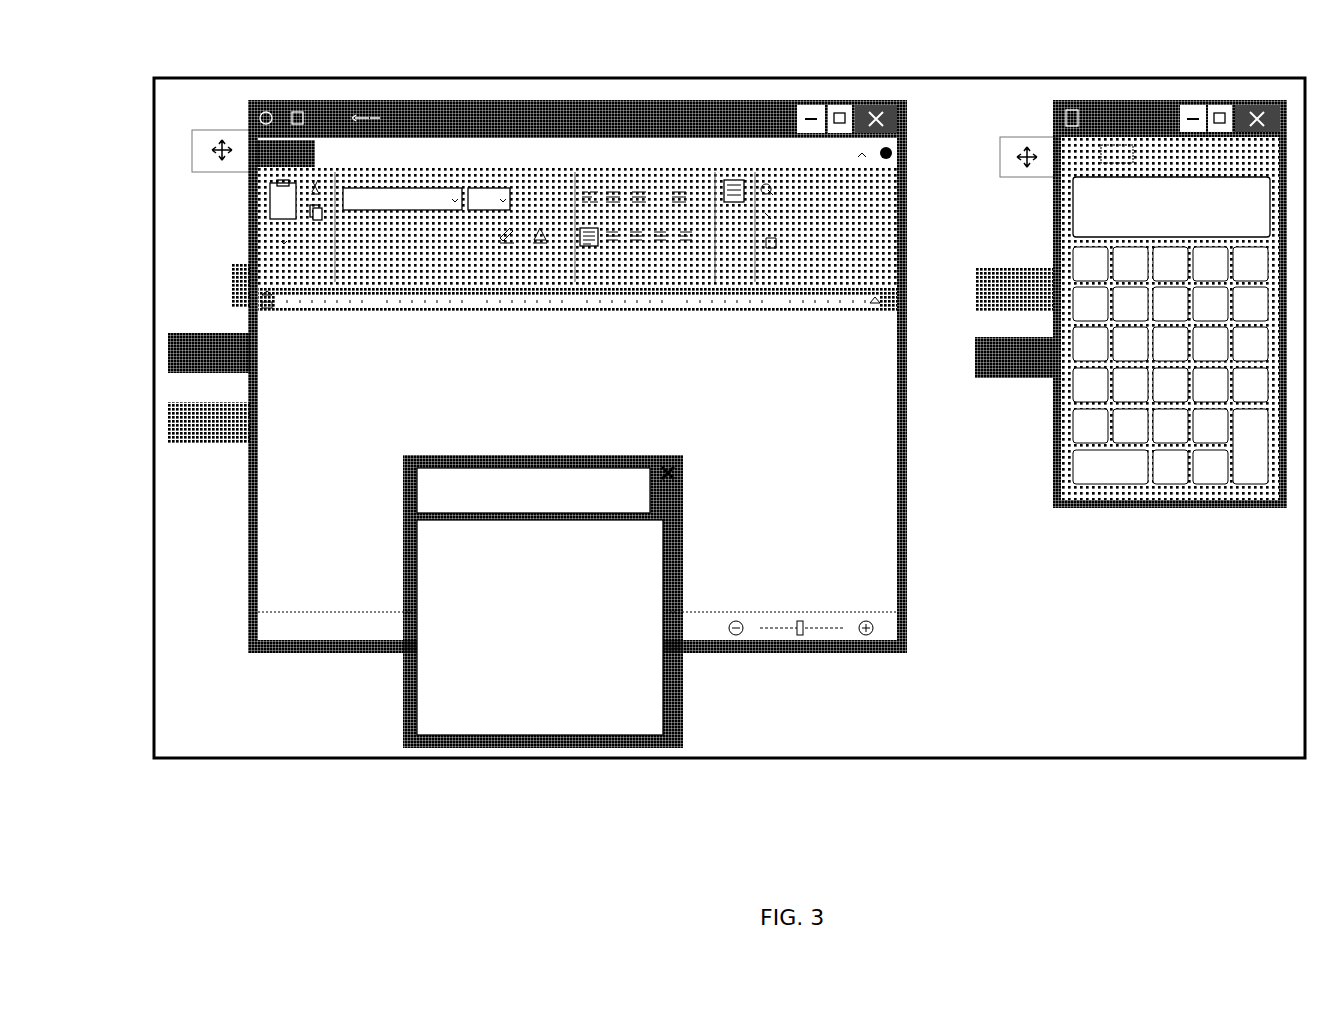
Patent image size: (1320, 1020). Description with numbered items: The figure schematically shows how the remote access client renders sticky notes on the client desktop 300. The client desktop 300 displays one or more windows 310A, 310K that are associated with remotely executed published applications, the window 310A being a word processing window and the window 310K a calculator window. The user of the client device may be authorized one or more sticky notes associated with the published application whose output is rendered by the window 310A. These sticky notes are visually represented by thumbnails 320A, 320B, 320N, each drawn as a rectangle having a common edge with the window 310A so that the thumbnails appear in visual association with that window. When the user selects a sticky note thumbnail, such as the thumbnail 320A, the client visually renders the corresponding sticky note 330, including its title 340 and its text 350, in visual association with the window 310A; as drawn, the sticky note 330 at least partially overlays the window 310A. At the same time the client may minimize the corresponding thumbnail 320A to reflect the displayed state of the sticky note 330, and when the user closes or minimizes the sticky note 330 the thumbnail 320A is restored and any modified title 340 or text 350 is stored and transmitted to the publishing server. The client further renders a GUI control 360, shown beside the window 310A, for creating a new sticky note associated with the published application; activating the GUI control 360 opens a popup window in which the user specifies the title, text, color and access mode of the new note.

The client desktop 300 is at (1243, 43).
The window 310A is at (480, 100).
The window 310K is at (1152, 97).
The thumbnail 320A is at (232, 277).
The thumbnail 320B is at (168, 352).
The thumbnail 320N is at (168, 432).
The sticky note 330 is at (568, 569).
The title 340 is at (533, 490).
The text 350 is at (540, 627).
The GUI control 360 is at (188, 148).